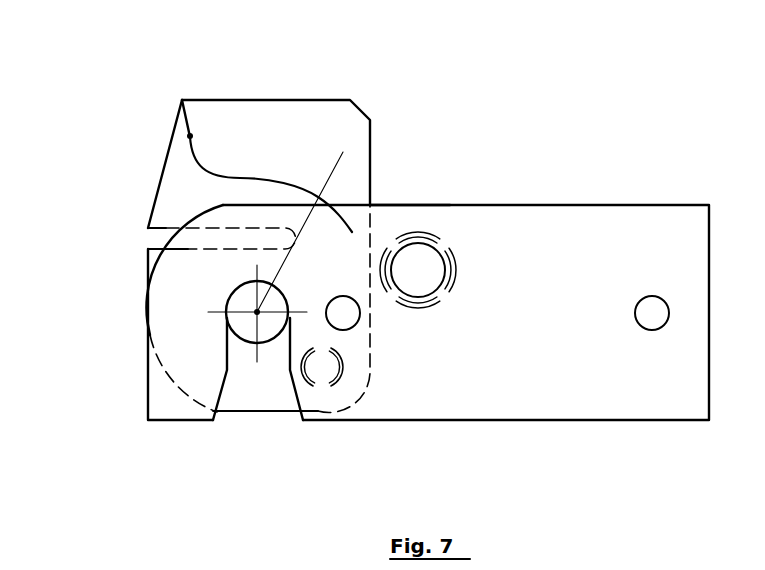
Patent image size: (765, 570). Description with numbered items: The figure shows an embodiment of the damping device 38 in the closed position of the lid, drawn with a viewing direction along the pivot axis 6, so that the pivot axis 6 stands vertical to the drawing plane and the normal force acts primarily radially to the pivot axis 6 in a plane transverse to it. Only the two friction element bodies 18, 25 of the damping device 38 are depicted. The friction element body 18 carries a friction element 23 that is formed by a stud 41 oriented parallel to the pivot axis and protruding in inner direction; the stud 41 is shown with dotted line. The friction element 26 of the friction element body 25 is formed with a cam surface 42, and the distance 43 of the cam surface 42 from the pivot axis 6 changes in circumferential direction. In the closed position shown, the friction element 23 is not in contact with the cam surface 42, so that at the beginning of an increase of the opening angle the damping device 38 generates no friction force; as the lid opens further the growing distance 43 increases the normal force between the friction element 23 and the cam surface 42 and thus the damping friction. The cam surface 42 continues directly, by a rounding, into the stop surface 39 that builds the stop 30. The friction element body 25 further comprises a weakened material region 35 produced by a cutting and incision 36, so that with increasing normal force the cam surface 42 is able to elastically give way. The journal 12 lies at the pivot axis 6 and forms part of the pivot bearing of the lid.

The pivot axis 6 is at (259, 311).
The journal 12 is at (267, 331).
The friction element body 18 is at (600, 267).
The friction element 23 is at (463, 219).
The friction element body 25 is at (178, 175).
The friction element 26 is at (271, 136).
The stop 30 is at (221, 89).
The weakened material region 35 is at (313, 258).
The cutting and incision 36 is at (160, 229).
The damping device 38 is at (447, 169).
The stop surface 39 is at (192, 135).
The stud 41 is at (427, 265).
The cam surface 42 is at (270, 177).
The distance 43 is at (319, 197).